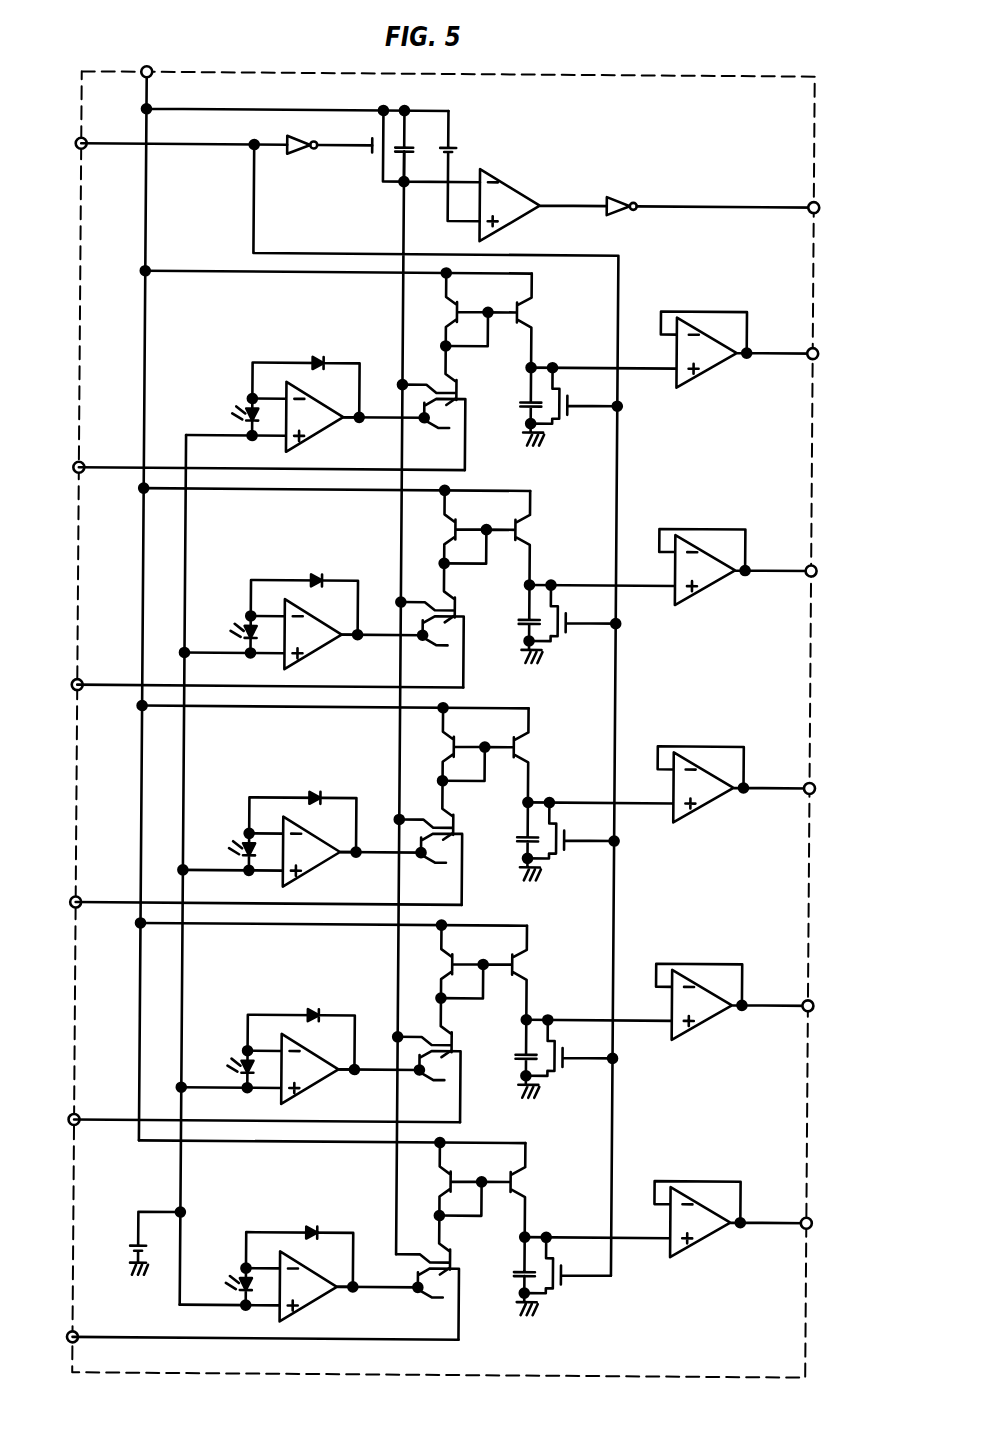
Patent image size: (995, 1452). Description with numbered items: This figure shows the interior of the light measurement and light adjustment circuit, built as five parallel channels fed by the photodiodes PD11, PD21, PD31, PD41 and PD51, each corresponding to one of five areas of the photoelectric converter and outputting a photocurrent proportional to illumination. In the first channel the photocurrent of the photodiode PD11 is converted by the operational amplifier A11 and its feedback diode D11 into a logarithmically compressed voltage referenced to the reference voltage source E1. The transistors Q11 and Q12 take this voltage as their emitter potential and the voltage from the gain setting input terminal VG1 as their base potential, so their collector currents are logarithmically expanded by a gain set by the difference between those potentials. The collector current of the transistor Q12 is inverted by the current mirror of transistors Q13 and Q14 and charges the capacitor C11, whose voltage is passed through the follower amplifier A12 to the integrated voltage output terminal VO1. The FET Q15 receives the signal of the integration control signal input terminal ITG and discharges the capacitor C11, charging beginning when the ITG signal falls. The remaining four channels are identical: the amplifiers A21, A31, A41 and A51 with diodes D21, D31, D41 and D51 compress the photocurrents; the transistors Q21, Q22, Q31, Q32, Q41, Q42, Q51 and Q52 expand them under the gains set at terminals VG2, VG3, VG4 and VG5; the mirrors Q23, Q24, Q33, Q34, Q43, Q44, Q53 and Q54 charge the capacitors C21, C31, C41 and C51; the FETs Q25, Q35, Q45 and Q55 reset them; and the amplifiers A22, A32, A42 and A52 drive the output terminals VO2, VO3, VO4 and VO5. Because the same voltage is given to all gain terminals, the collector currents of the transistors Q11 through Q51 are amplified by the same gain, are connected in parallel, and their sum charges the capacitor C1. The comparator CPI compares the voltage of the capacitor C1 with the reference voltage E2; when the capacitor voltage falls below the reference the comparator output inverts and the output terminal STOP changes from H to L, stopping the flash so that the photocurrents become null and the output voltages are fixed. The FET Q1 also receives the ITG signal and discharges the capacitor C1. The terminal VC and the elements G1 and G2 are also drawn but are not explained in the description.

The supply voltage terminal VC is at (137, 57).
The integration control signal input terminal ITG is at (160, 129).
The inverter G1 is at (329, 131).
The FET Q1 is at (379, 151).
The capacitor C1 is at (438, 149).
The reference voltage E2 is at (460, 166).
The comparator CPI is at (544, 201).
The inverter G2 is at (710, 195).
The output terminal STOP is at (840, 191).
The reference voltage source E1 is at (141, 1241).
The transistor Q11 is at (404, 434).
The transistor Q12 is at (450, 376).
The current mirror transistor Q13 is at (448, 310).
The current mirror transistor Q14 is at (507, 320).
The FET Q15 is at (576, 408).
The capacitor C11 is at (513, 404).
The operational amplifier A11 is at (308, 425).
The follower amplifier A12 is at (672, 360).
The feedback diode D11 is at (306, 369).
The photodiode PD11 is at (217, 410).
The integrated voltage output terminal VO1 is at (833, 338).
The gain setting input terminal VG1 is at (247, 454).
The transistor Q21 is at (402, 652).
The transistor Q22 is at (448, 593).
The current mirror transistor Q23 is at (447, 527).
The current mirror transistor Q24 is at (505, 537).
The FET Q25 is at (575, 625).
The capacitor C21 is at (511, 621).
The operational amplifier A21 is at (306, 642).
The follower amplifier A22 is at (670, 577).
The feedback diode D21 is at (305, 586).
The photodiode PD21 is at (215, 628).
The integrated voltage output terminal VO2 is at (832, 556).
The gain setting input terminal VG2 is at (245, 672).
The transistor Q31 is at (401, 869).
The transistor Q32 is at (447, 810).
The current mirror transistor Q33 is at (445, 744).
The current mirror transistor Q34 is at (504, 755).
The FET Q35 is at (573, 843).
The capacitor C31 is at (509, 839).
The operational amplifier A31 is at (305, 859).
The follower amplifier A32 is at (669, 794).
The feedback diode D31 is at (303, 804).
The photodiode PD31 is at (213, 845).
The integrated voltage output terminal VO3 is at (830, 773).
The gain setting input terminal VG3 is at (244, 889).
The transistor Q41 is at (399, 1086).
The transistor Q42 is at (445, 1028).
The current mirror transistor Q43 is at (443, 962).
The current mirror transistor Q44 is at (502, 972).
The FET Q45 is at (572, 1060).
The capacitor C41 is at (508, 1056).
The operational amplifier A41 is at (303, 1077).
The follower amplifier A42 is at (667, 1012).
The feedback diode D41 is at (301, 1021).
The photodiode PD41 is at (212, 1063).
The integrated voltage output terminal VO4 is at (828, 991).
The gain setting input terminal VG4 is at (242, 1107).
The transistor Q51 is at (397, 1304).
The transistor Q52 is at (446, 1245).
The current mirror transistor Q53 is at (442, 1179).
The current mirror transistor Q54 is at (501, 1190).
The FET Q55 is at (567, 1278).
The capacitor C51 is at (506, 1273).
The operational amplifier A51 is at (301, 1294).
The follower amplifier A52 is at (665, 1229).
The feedback diode D51 is at (300, 1239).
The photodiode PD51 is at (210, 1280).
The integrated voltage output terminal VO5 is at (827, 1208).
The gain setting input terminal VG5 is at (240, 1324).